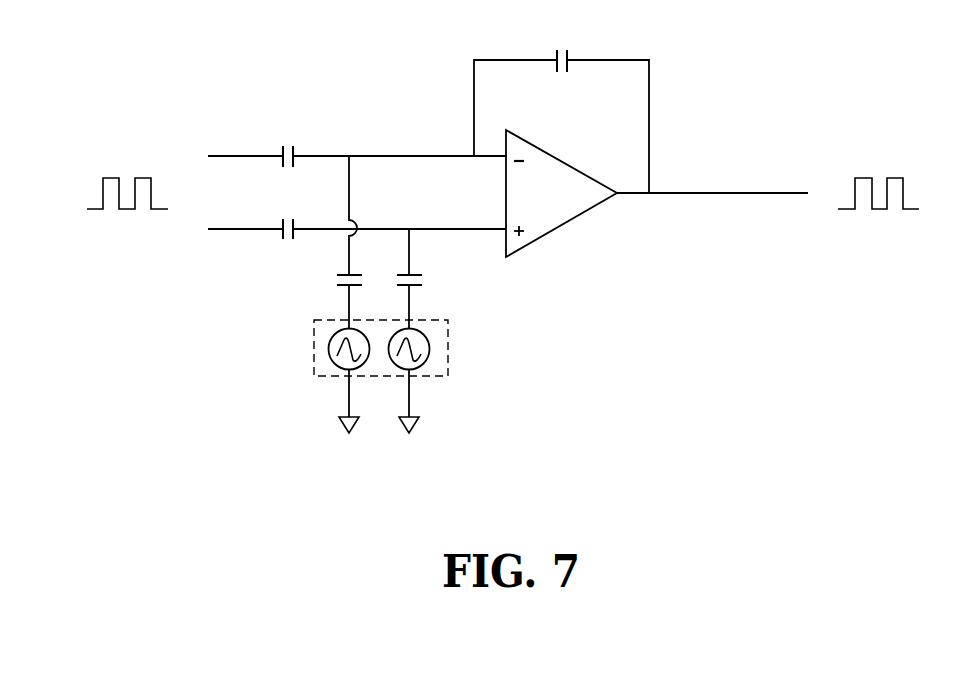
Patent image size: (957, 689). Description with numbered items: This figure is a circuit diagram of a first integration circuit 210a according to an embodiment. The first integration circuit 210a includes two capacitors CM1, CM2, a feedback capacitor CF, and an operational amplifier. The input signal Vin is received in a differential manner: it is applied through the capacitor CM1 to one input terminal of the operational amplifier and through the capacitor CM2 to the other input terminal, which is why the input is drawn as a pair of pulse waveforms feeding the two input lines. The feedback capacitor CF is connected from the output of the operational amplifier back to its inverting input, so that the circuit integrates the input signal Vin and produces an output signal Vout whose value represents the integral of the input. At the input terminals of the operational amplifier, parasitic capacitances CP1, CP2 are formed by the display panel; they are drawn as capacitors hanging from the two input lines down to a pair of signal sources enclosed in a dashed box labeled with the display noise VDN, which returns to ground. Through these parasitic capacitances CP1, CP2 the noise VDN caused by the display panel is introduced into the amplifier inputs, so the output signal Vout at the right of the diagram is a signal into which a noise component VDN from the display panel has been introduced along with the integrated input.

The first integration circuit 210a is at (162, 25).
The input signal Vin is at (127, 168).
The capacitor CM1 is at (272, 133).
The capacitor CM2 is at (269, 249).
The parasitic capacitance CP1 is at (335, 298).
The parasitic capacitance CP2 is at (427, 298).
The noise due to the display panel VDN is at (406, 360).
The feedback capacitor CF is at (564, 41).
The output signal Vout is at (878, 168).